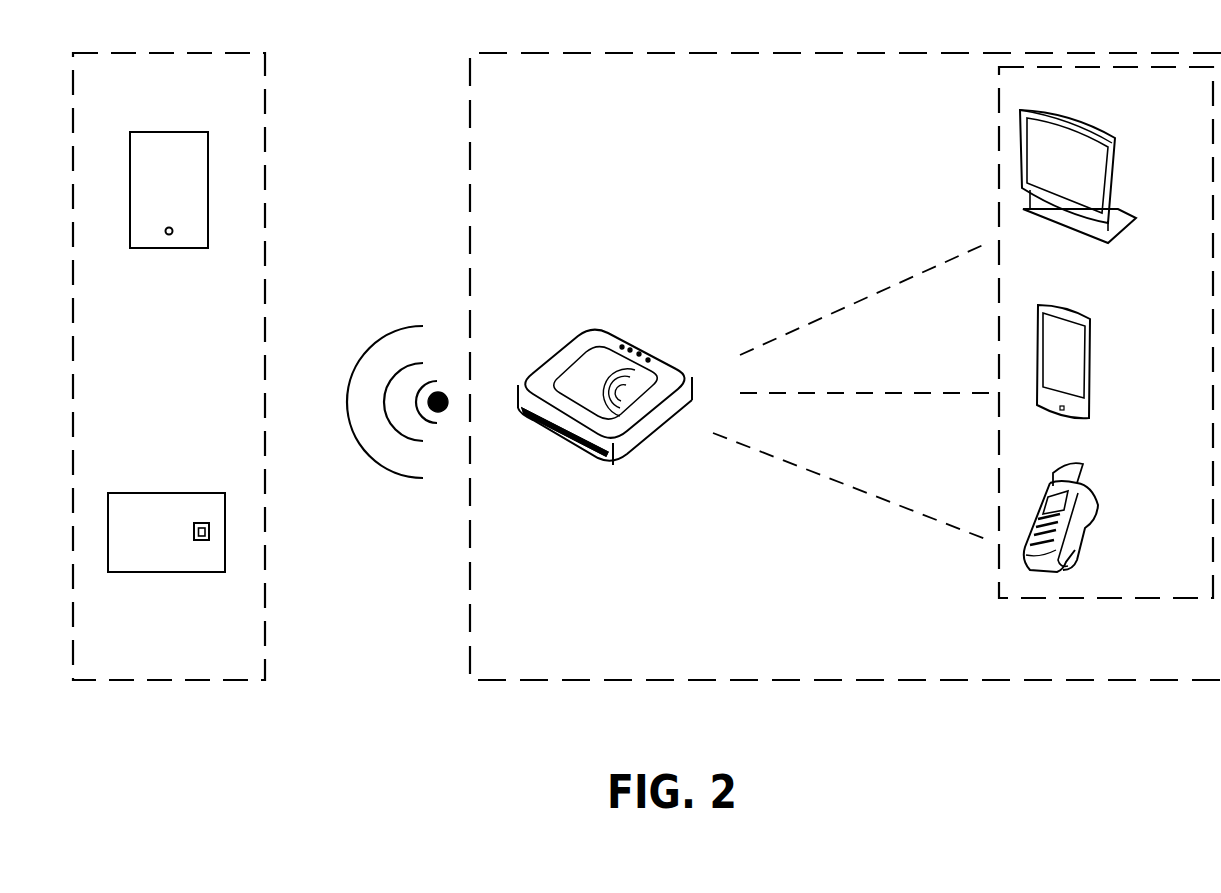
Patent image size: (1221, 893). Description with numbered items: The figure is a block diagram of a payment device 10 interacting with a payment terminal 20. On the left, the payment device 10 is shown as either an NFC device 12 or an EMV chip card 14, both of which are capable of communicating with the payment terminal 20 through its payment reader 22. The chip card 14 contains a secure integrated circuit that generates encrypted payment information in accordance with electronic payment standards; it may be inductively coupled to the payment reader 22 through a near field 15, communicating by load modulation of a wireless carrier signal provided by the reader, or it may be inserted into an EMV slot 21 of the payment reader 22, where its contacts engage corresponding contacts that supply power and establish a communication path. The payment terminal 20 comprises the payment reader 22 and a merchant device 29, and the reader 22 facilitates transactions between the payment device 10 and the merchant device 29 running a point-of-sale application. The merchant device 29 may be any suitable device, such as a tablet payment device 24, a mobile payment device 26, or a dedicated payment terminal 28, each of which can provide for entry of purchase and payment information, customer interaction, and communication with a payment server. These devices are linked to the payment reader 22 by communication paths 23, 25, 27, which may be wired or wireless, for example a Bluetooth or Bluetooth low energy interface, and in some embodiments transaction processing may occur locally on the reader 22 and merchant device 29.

The payment device 10 is at (157, 52).
The NFC device 12 is at (190, 132).
The EMV chip card 14 is at (197, 493).
The near field 15 is at (399, 300).
The payment terminal 20 is at (862, 680).
The EMV slot 21 is at (553, 443).
The payment reader 22 is at (650, 347).
The communication path 23 is at (910, 277).
The tablet payment device 24 is at (1103, 128).
The communication path 25 is at (928, 393).
The mobile payment device 26 is at (1092, 333).
The communication path 27 is at (920, 513).
The dedicated payment terminal 28 is at (1097, 495).
The merchant device 29 is at (1073, 600).